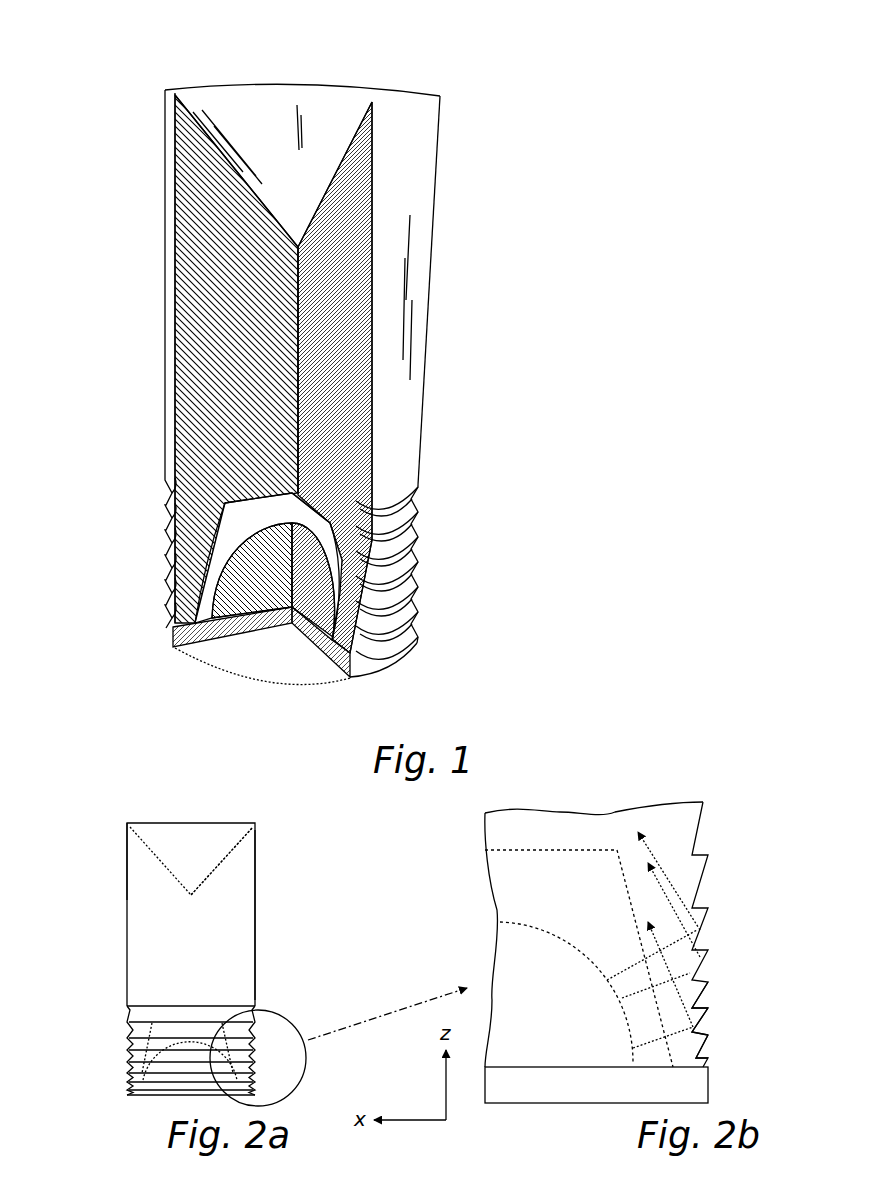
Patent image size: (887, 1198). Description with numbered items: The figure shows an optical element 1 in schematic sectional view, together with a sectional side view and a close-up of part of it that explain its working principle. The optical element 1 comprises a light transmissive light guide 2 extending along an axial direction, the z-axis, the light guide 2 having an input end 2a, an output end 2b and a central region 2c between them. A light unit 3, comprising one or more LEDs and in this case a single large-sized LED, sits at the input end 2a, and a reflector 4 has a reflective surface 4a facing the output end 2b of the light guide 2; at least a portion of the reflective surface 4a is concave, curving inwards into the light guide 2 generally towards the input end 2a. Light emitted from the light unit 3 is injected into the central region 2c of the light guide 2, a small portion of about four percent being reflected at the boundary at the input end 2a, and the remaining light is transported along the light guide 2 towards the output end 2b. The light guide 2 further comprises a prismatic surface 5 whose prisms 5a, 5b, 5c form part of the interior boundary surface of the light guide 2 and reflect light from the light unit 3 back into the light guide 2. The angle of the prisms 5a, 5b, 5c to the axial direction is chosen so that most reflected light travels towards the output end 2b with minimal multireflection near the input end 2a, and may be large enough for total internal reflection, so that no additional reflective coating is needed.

In FIG. 1, the optical element 1 is at (82, 72).
In FIG. 1, the light guide 2 is at (460, 252).
In FIG. 2A, the light guide 2 is at (105, 922).
In FIG. 1, the input end 2a is at (178, 592).
In FIG. 2A, the input end 2a is at (137, 1072).
In FIG. 2B, the input end 2a is at (598, 833).
In FIG. 1, the output end 2b is at (180, 130).
In FIG. 2A, the output end 2b is at (134, 845).
In FIG. 1, the central region 2c is at (408, 410).
In FIG. 2A, the central region 2c is at (233, 918).
In FIG. 1, the light unit 3 is at (253, 573).
In FIG. 2A, the light unit 3 is at (215, 1055).
In FIG. 2B, the light unit 3 is at (523, 950).
In FIG. 1, the reflector 4 is at (248, 112).
In FIG. 2A, the reflector 4 is at (185, 840).
In FIG. 1, the reflective surface 4a is at (253, 198).
In FIG. 2A, the reflective surface 4a is at (223, 865).
In FIG. 1, the prismatic surface 5 is at (450, 552).
In FIG. 2A, the prismatic surface 5 is at (265, 1043).
In FIG. 2B, the prismatic surface 5 is at (733, 877).
In FIG. 2B, the prism 5a is at (700, 1043).
In FIG. 2B, the prism 5b is at (697, 1030).
In FIG. 2B, the prism 5c is at (697, 1002).